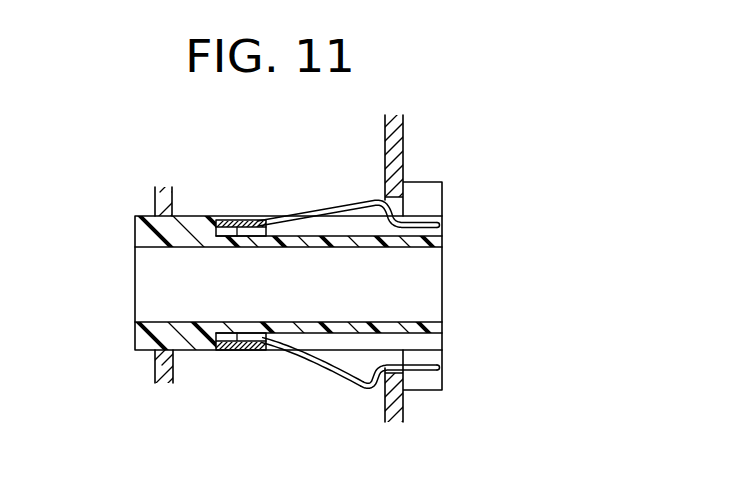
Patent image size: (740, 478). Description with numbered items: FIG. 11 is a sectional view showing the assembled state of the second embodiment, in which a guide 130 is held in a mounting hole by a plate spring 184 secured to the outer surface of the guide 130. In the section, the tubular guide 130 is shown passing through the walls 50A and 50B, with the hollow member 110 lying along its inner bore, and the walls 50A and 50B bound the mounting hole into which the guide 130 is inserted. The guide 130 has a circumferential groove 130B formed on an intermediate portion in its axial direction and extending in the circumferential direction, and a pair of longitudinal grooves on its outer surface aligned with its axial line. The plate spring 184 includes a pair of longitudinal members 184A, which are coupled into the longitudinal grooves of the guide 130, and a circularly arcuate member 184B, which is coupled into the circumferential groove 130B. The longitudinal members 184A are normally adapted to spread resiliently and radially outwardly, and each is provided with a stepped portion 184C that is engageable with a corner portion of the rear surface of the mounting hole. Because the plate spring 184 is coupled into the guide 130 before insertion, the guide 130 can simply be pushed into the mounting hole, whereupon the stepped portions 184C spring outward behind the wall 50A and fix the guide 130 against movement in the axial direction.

The first housing wall 50A is at (404, 150).
The second housing wall 50B is at (156, 193).
The tube 110 is at (418, 247).
The guide 130 is at (136, 341).
The circumferential groove 130B is at (226, 247).
The plate spring 184 is at (281, 354).
The longitudinal members 184A is at (321, 368).
The circularly arcuate member 184B is at (227, 350).
The stepped portion 184C is at (382, 384).